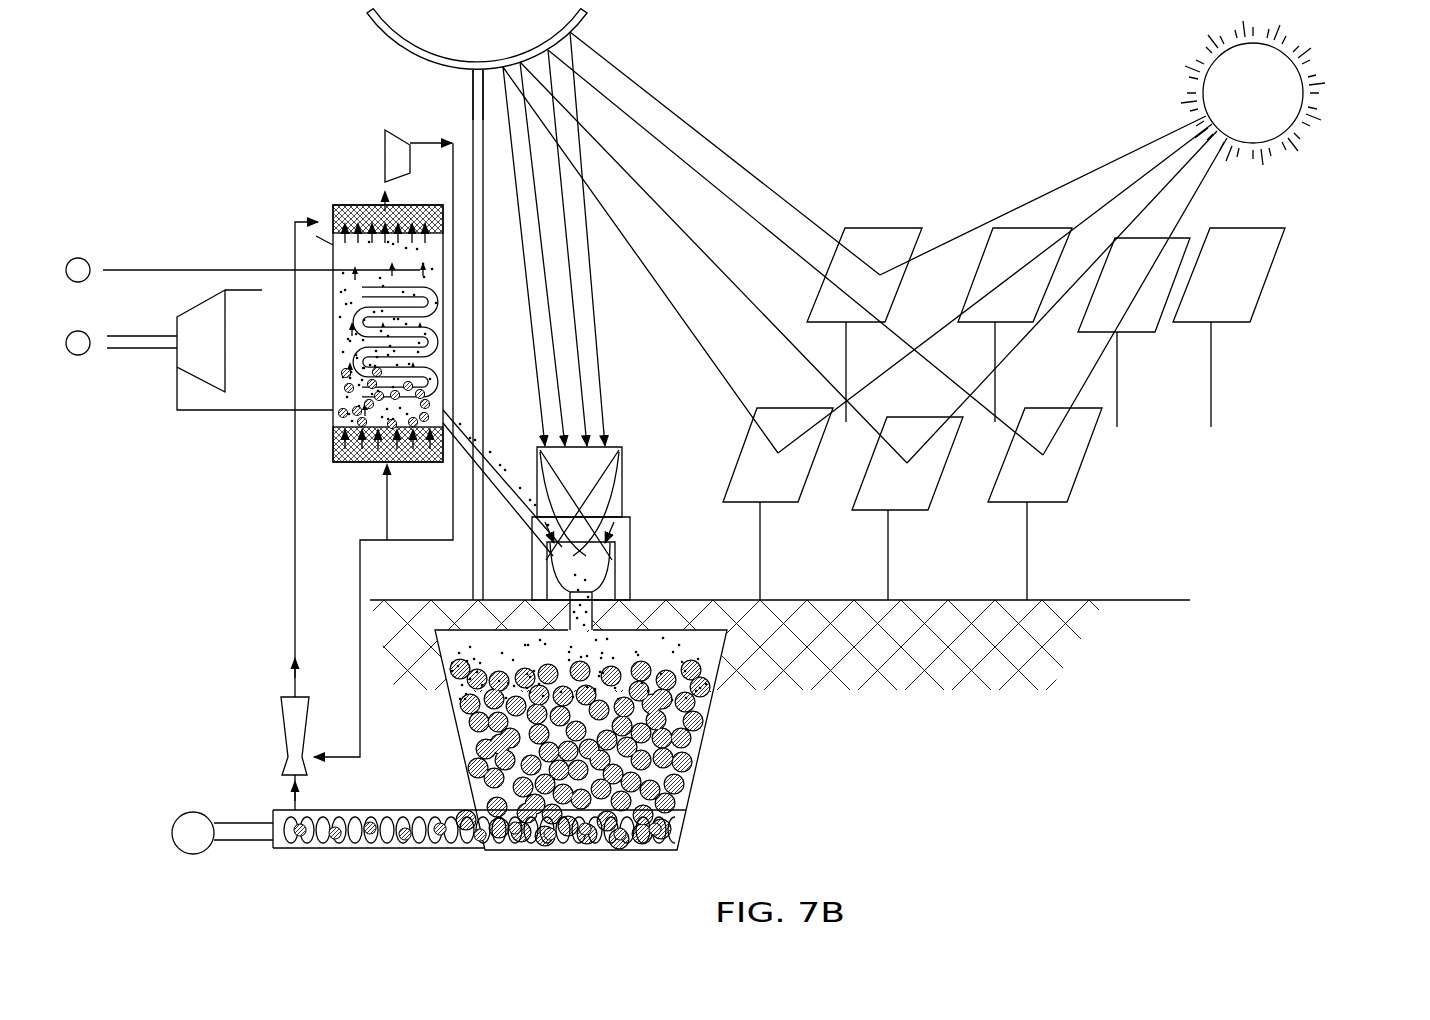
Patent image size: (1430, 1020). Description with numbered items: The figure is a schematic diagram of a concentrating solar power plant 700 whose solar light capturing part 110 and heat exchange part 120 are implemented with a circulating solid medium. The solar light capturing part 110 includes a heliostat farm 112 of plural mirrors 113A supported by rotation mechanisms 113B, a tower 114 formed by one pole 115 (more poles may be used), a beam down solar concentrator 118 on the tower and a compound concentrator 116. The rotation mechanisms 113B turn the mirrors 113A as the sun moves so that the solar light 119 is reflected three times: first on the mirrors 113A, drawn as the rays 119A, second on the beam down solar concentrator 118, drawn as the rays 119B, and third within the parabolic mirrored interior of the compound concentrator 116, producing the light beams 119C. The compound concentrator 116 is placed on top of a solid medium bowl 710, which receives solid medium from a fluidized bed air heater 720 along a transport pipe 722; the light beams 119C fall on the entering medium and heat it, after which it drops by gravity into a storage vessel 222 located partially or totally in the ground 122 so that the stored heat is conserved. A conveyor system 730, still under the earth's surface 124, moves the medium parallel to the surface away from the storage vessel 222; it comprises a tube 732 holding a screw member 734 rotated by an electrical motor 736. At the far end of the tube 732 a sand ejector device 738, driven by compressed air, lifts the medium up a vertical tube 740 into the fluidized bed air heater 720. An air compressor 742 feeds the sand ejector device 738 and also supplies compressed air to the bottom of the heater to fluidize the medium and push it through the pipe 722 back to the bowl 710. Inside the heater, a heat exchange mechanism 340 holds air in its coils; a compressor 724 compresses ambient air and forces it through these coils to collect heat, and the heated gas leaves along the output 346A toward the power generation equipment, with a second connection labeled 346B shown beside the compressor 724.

The CSP plant 700 is at (200, 70).
The solar light capturing part 110 is at (1167, 104).
The heliostat farm 112 is at (1070, 414).
The mirrors 113A is at (1258, 320).
The rotation mechanisms 113B is at (1213, 370).
The tower 114 is at (462, 95).
The pole 115 is at (470, 93).
The compound concentrator 116 is at (625, 455).
The beam down solar concentrator 118 is at (610, 27).
The solar light 119 is at (1212, 185).
The reflected rays from heliostats 119A is at (715, 132).
The concentrated rays to receiver 119B is at (600, 355).
The light beams 119C is at (600, 525).
The heat exchange part 120 is at (617, 740).
The ground 122 is at (1095, 648).
The earth's surface 124 is at (1150, 598).
The storage vessel 222 is at (712, 702).
The heat exchange mechanism 340 is at (337, 297).
The output 346A is at (118, 265).
The air inlet housing 346B is at (205, 410).
The solid medium bowl 710 is at (632, 563).
The fluidized bed air heater 720 is at (319, 302).
The transport pipe 722 is at (521, 471).
The compressor 724 is at (178, 318).
The conveyor system 730 is at (479, 829).
The tube 732 is at (273, 825).
The screw member 734 is at (335, 842).
The electrical motor 736 is at (190, 811).
The sand ejector device 738 is at (281, 718).
The vertical tube 740 is at (294, 533).
The air compressor 742 is at (385, 145).